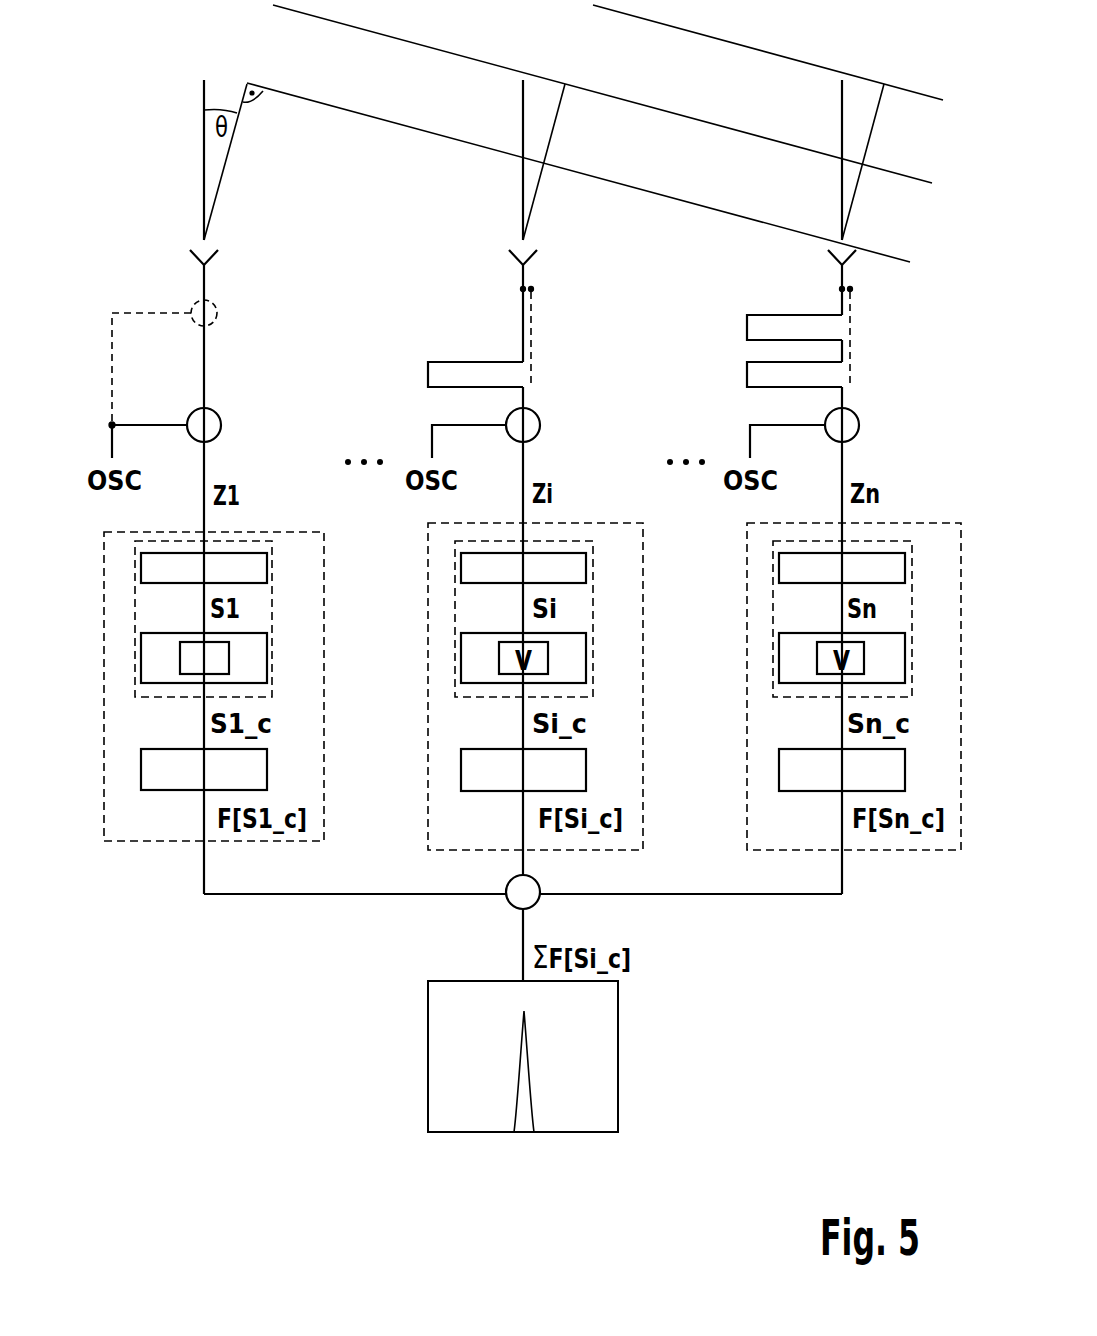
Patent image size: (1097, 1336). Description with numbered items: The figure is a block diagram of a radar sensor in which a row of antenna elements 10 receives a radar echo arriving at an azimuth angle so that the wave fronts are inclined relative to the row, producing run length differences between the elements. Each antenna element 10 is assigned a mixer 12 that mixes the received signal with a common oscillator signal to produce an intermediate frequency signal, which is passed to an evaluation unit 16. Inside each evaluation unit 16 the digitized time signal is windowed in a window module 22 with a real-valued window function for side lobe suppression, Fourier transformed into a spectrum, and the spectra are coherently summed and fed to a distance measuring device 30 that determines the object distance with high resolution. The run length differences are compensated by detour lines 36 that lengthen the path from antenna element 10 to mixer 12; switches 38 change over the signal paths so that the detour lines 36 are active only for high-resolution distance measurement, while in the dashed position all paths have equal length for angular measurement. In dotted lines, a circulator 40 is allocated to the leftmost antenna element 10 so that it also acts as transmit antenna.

The antenna element 10 is at (190, 258).
The mixer 12 is at (222, 425).
The evaluation unit 16 is at (104, 582).
The window module 22 is at (141, 665).
The distance measuring device 30 is at (620, 1079).
The detour line 36 is at (428, 372).
The switch 38 is at (533, 284).
The circulator 40 is at (218, 313).